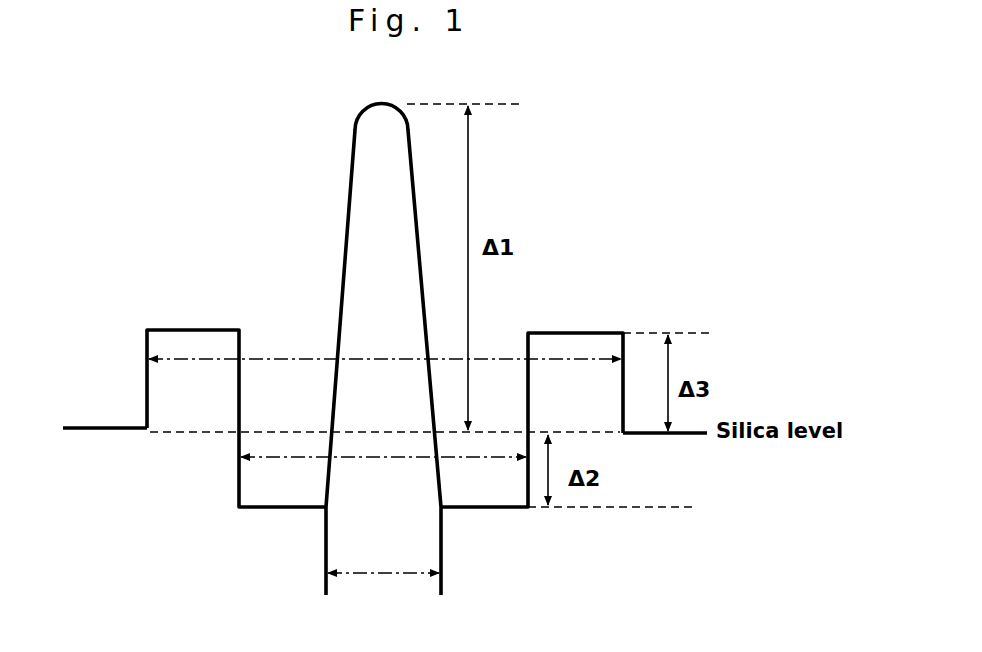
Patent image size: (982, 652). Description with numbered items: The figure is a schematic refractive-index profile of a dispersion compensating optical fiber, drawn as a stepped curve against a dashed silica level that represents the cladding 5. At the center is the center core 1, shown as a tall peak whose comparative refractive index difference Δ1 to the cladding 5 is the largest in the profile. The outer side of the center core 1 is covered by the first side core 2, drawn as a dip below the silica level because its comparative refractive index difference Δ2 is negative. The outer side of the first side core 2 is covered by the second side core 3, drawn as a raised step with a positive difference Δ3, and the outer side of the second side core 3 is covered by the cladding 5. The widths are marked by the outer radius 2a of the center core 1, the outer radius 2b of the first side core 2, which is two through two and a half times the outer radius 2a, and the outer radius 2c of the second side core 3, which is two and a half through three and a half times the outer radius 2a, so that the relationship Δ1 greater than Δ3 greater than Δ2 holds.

The center core 1 is at (352, 160).
The first side core 2 is at (283, 509).
The second side core 3 is at (182, 330).
The cladding 5 is at (106, 430).
The outer radius of the center core 2a is at (383, 558).
The outer radius of the first side core 2b is at (383, 480).
The outer radius of the second side core 2c is at (385, 380).